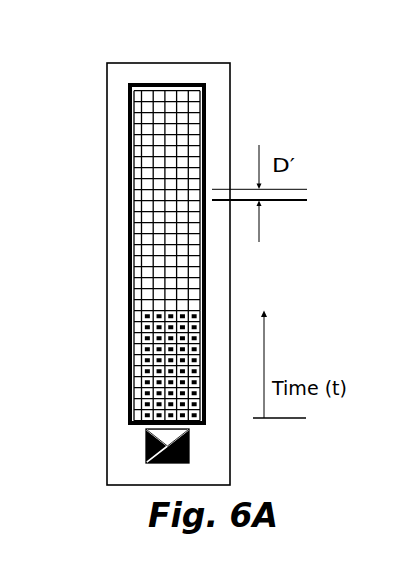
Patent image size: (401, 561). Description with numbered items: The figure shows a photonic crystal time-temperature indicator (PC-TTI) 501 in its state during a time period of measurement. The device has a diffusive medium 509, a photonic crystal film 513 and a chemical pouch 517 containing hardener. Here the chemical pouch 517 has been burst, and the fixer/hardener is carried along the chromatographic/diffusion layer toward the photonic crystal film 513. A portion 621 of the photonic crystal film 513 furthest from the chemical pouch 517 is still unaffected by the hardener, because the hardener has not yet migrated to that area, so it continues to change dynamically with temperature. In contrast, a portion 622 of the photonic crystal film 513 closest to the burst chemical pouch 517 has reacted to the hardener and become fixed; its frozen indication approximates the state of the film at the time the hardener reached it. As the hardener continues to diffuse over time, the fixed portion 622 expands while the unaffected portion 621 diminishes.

The photonic crystal time-temperature indicator (PC-TTI) 501 is at (247, 35).
The diffusive medium 509 is at (230, 101).
The photonic crystal film 513 is at (206, 137).
The chemical pouch 517 is at (189, 442).
The portion of photonic crystal film unaffected by hardener 621 is at (97, 90).
The portion of photonic crystal film fixed by hardener 622 is at (97, 313).